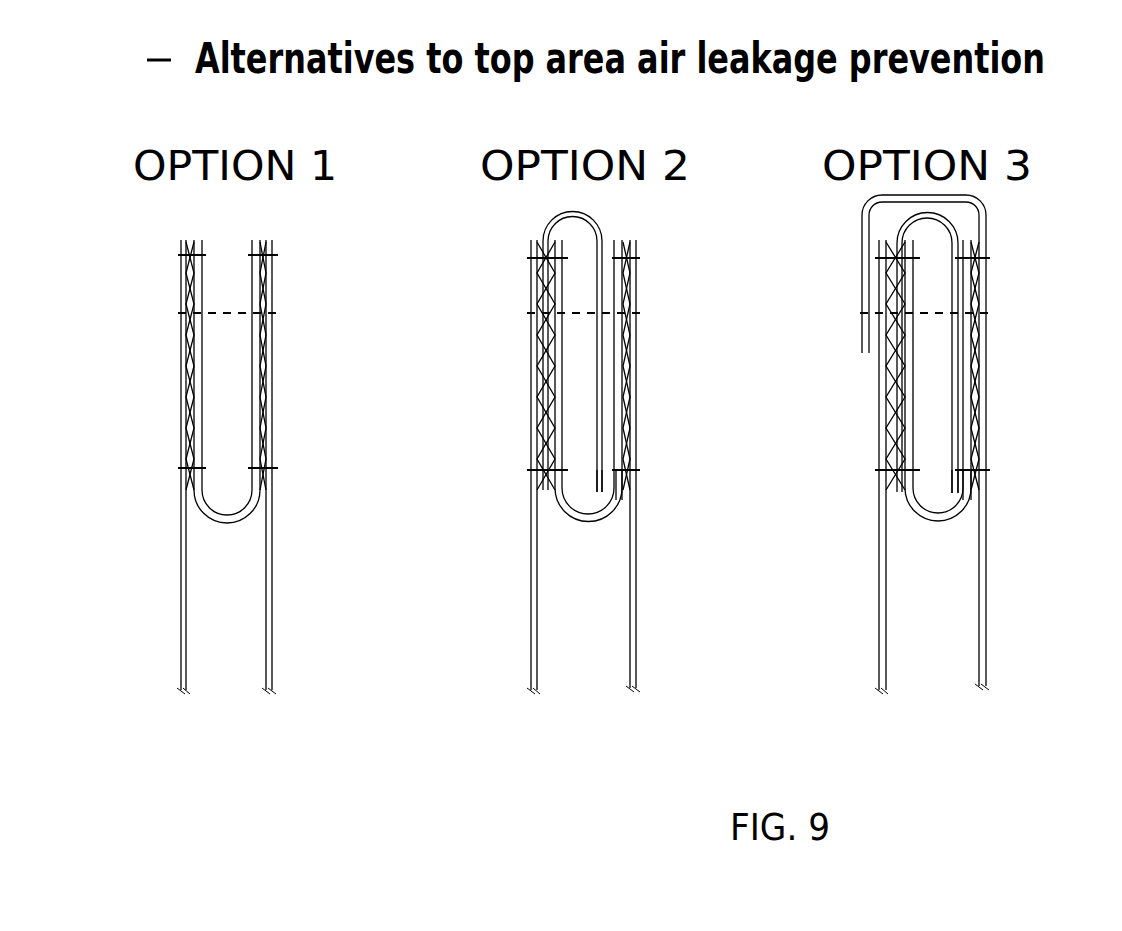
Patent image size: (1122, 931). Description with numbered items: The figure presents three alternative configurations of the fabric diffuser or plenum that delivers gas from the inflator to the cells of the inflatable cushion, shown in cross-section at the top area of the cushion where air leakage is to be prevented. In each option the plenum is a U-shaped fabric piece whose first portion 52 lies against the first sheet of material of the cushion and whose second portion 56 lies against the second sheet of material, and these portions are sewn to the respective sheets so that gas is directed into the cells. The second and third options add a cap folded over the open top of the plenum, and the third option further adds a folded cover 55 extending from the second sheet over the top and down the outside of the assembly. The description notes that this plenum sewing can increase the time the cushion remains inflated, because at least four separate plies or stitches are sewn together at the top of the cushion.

The first portion of the plenum 52 is at (188, 365).
The folded cover 55 is at (880, 197).
The second portion of the plenum 56 is at (258, 362).